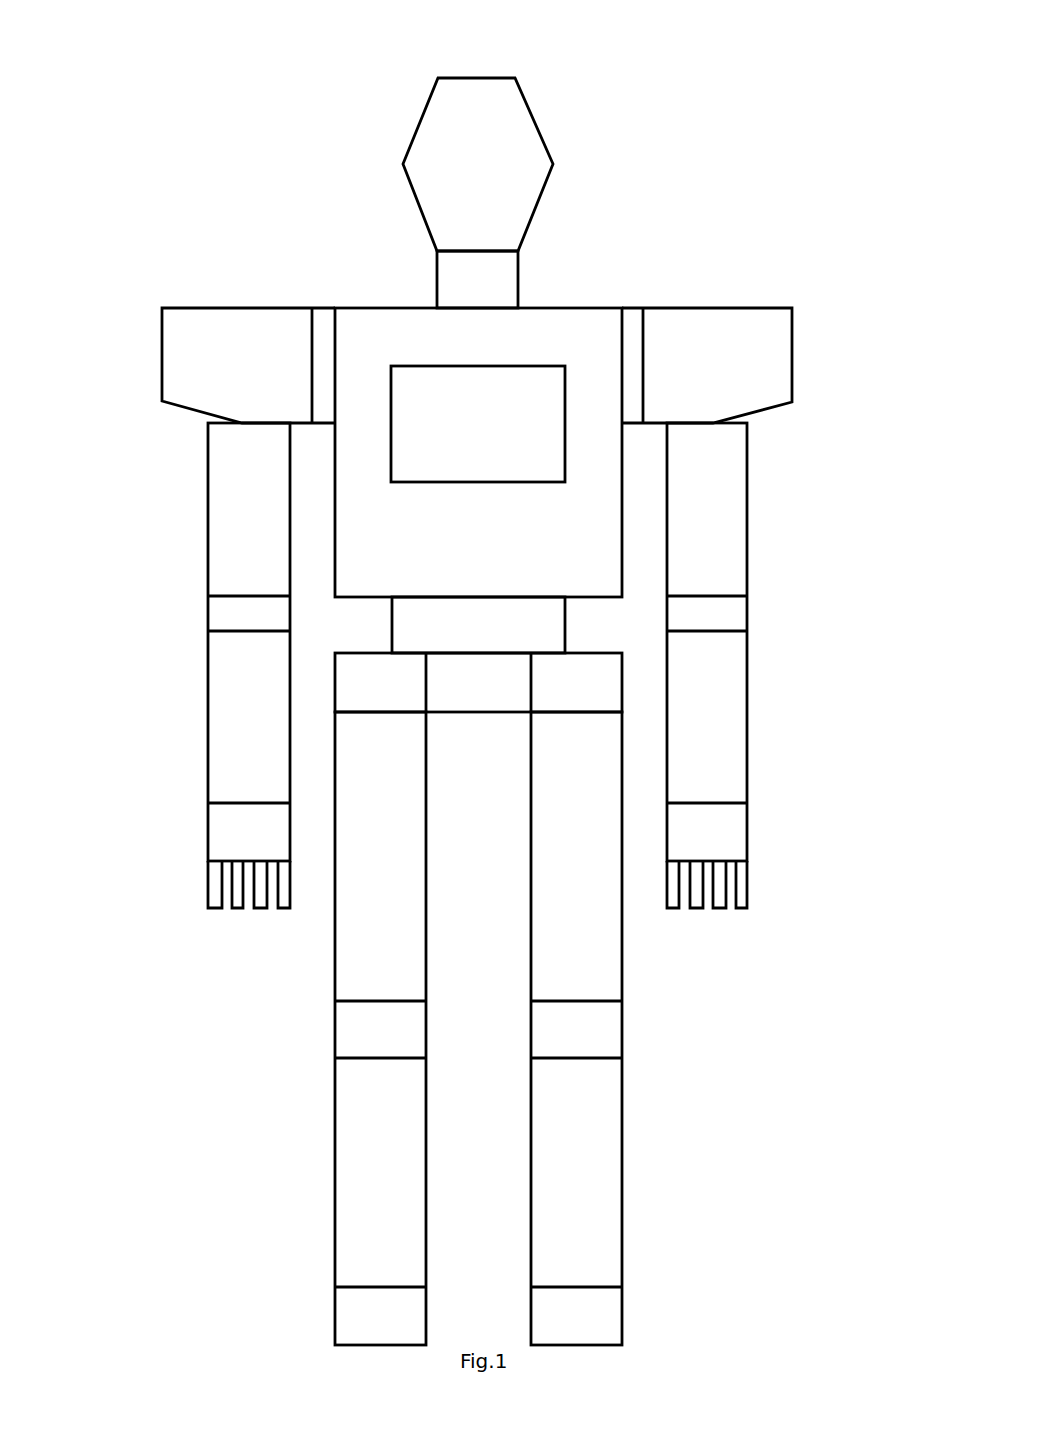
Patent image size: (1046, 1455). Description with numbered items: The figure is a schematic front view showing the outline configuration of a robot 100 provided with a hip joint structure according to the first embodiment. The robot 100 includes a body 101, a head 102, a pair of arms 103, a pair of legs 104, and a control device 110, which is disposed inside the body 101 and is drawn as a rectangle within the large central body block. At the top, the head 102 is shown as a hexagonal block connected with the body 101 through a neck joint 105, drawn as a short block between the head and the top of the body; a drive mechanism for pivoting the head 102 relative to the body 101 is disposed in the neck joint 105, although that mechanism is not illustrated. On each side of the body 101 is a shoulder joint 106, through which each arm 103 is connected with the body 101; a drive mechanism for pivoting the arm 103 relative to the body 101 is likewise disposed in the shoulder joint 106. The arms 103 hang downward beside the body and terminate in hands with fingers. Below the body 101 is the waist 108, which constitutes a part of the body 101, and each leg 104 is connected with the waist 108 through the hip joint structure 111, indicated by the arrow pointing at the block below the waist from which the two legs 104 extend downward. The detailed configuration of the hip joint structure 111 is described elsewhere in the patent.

The robot 100 is at (492, 24).
The body 101 is at (335, 468).
The head 102 is at (403, 164).
The arm 103 is at (208, 511).
The leg 104 is at (335, 782).
The neck joint 105 is at (437, 270).
The shoulder joint 106 is at (323, 343).
The waist 108 is at (392, 627).
The control device 110 is at (391, 393).
The hip joint structure 111 is at (624, 688).